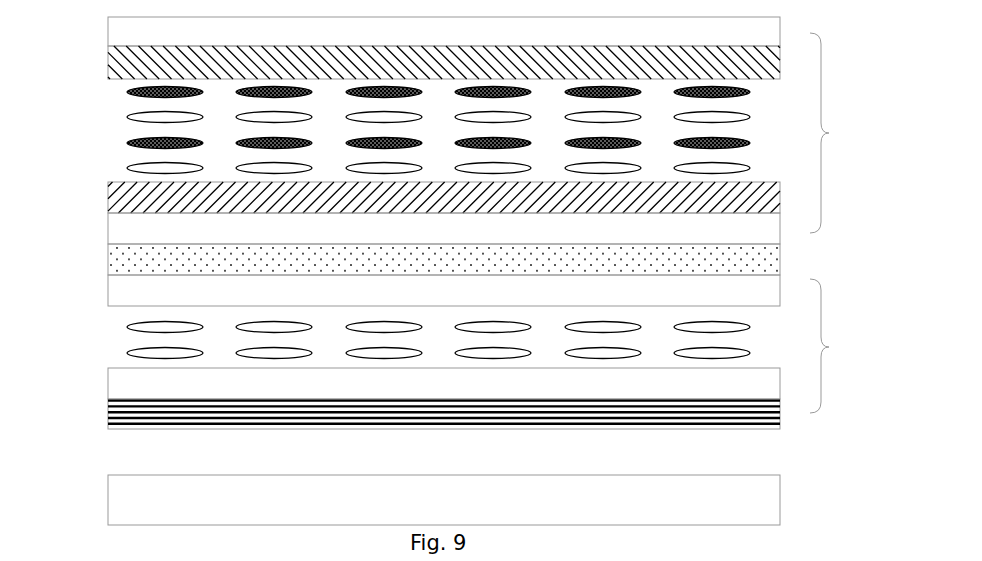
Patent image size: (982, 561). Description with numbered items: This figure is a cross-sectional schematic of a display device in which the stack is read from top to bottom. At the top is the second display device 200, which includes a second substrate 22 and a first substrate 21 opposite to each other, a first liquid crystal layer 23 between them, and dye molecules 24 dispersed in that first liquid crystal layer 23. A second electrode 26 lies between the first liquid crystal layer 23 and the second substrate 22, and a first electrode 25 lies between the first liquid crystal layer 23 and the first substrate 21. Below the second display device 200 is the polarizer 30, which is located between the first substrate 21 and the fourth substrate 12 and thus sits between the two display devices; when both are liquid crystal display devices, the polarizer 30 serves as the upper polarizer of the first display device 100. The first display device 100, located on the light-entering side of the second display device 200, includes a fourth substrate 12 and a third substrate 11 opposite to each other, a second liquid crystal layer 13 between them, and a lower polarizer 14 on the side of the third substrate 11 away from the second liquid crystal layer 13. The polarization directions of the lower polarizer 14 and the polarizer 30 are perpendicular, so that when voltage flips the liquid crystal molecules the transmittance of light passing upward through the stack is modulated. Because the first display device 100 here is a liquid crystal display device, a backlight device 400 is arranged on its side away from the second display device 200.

The second substrate 22 is at (108, 32).
The second electrode 26 is at (108, 62).
The first liquid crystal layer 23 is at (128, 117).
The dye molecules 24 is at (128, 143).
The first electrode 25 is at (108, 197).
The first substrate 21 is at (108, 229).
The polarizer 30 is at (780, 259).
The fourth substrate 12 is at (108, 287).
The second liquid crystal layer 13 is at (128, 335).
The third substrate 11 is at (108, 383).
The lower polarizer 14 is at (108, 412).
The backlight device 400 is at (780, 498).
The second display device 200 is at (841, 133).
The first display device 100 is at (841, 346).